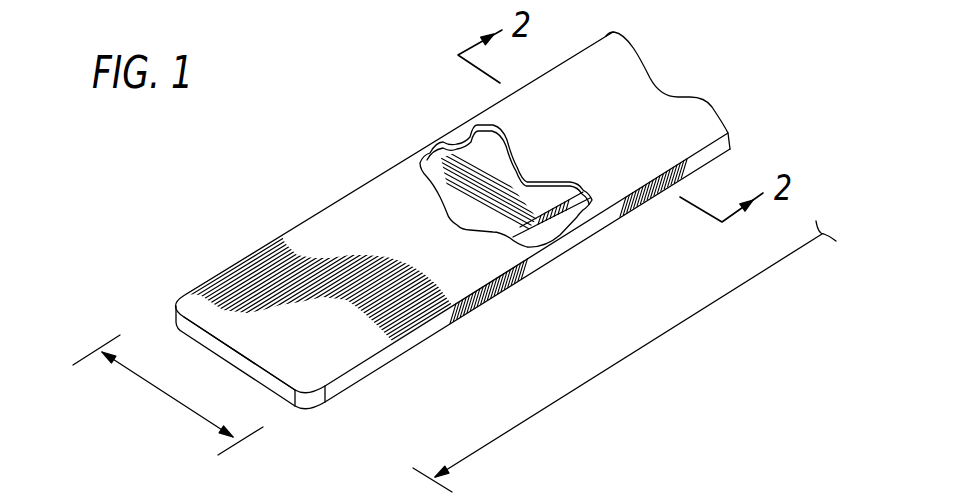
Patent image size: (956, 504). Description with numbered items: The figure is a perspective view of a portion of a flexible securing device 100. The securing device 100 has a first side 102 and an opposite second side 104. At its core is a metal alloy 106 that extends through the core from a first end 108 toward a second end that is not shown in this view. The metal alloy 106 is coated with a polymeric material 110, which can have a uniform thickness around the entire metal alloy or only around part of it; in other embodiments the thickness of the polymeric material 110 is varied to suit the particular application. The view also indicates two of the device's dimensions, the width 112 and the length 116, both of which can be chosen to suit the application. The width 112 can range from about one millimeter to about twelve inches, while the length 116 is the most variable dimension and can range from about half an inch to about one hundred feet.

The securing device 100 is at (312, 163).
The first side 102 is at (287, 247).
The second side 104 is at (310, 417).
The metal alloy 106 is at (483, 160).
The first end 108 is at (177, 313).
The polymeric material 110 is at (585, 210).
The width 112 is at (177, 400).
The length 116 is at (632, 354).